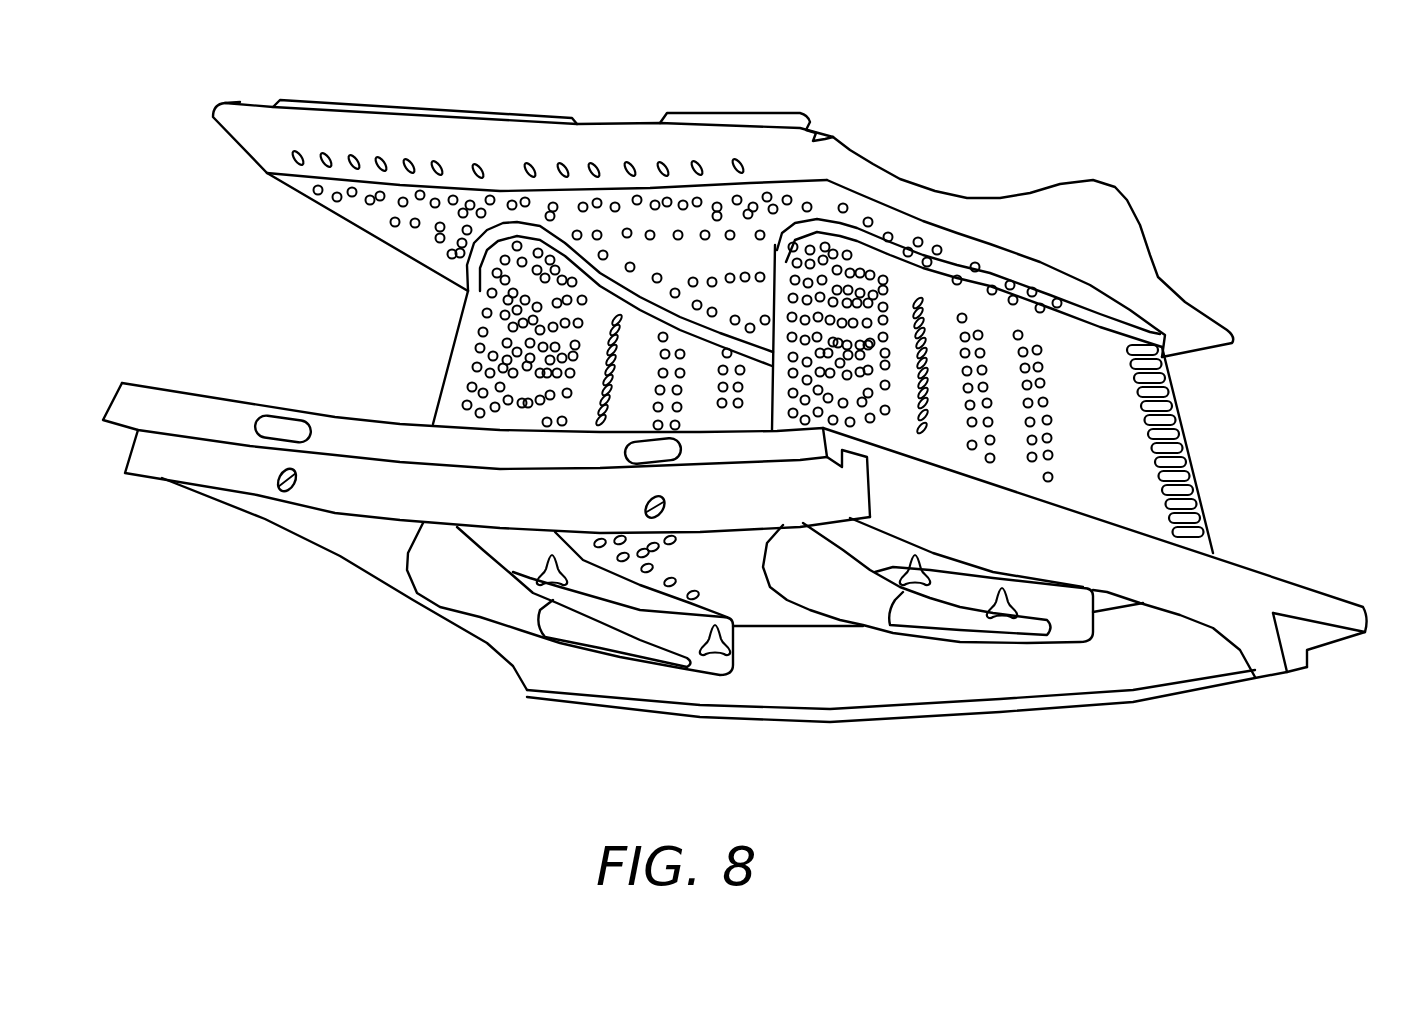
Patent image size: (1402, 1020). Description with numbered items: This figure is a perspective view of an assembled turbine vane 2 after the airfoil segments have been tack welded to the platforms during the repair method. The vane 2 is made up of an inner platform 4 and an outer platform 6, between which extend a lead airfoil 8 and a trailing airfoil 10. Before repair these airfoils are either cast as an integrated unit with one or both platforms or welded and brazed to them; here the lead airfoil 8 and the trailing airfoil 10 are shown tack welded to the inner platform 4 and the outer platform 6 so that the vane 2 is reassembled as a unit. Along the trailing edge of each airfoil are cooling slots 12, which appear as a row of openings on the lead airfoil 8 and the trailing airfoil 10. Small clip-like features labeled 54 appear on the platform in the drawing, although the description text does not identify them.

The turbine vane 2 is at (207, 71).
The inner platform 4 is at (715, 137).
The outer platform 6 is at (333, 530).
The lead airfoil 8 is at (646, 386).
The trailing airfoil 10 is at (1113, 423).
The cooling slots 12 is at (1170, 431).
The retaining clips 54 is at (528, 566).